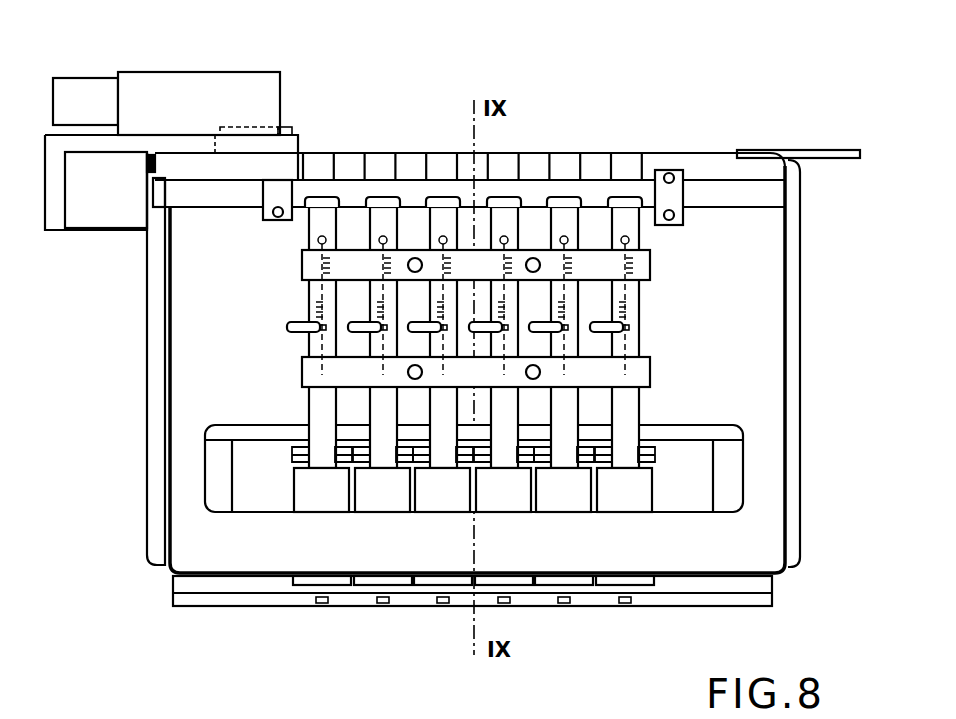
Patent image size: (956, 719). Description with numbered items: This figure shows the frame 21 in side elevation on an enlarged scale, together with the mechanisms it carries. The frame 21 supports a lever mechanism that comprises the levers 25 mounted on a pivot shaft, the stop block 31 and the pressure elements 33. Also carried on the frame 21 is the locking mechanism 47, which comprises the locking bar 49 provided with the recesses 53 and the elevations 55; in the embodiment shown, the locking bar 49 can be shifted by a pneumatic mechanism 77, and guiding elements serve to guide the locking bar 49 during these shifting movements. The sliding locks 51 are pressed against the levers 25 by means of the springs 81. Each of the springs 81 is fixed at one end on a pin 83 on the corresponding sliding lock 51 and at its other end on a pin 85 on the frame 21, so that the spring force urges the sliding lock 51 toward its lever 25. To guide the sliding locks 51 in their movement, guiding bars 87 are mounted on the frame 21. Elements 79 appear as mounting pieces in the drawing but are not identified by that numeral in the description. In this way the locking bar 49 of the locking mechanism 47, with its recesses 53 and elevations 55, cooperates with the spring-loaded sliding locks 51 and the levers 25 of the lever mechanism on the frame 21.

The frame 21 is at (813, 248).
The levers 25 is at (656, 495).
The stop block 31 is at (679, 566).
The pressure elements 33 is at (650, 450).
The locking mechanism 47 is at (303, 347).
The locking bar 49 is at (594, 190).
The sliding locks 51 is at (305, 396).
The recesses 53 is at (312, 212).
The elevations 55 is at (612, 226).
The pneumatic mechanism 77 is at (75, 72).
The mounting bracket 79 is at (293, 195).
The springs 81 is at (642, 321).
The pins 83 is at (318, 241).
The pins 85 is at (630, 333).
The guiding bars 87 is at (652, 276).